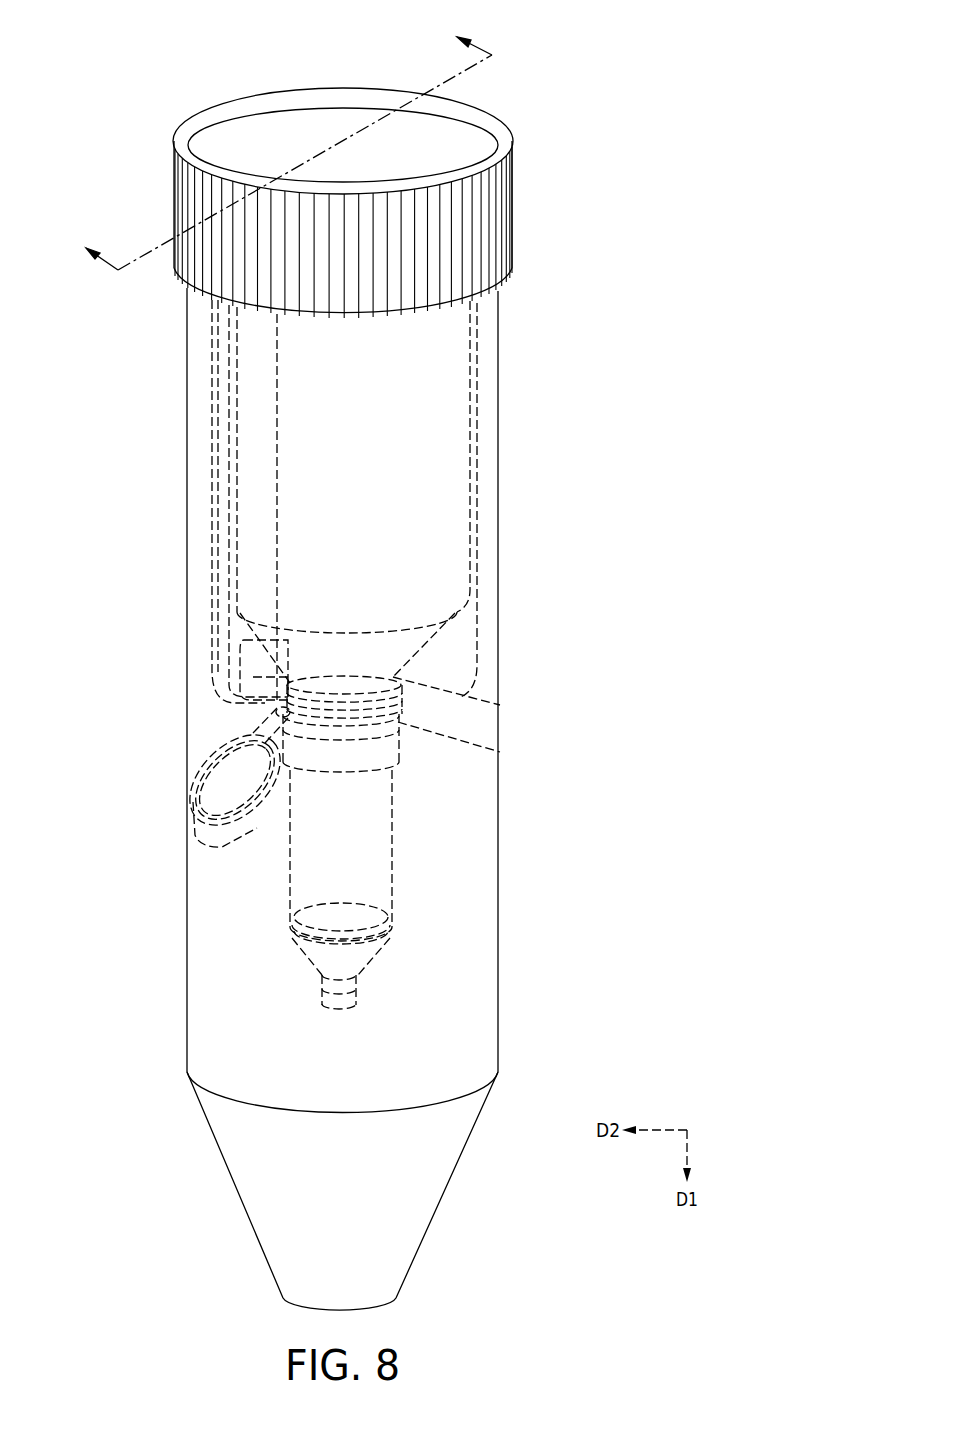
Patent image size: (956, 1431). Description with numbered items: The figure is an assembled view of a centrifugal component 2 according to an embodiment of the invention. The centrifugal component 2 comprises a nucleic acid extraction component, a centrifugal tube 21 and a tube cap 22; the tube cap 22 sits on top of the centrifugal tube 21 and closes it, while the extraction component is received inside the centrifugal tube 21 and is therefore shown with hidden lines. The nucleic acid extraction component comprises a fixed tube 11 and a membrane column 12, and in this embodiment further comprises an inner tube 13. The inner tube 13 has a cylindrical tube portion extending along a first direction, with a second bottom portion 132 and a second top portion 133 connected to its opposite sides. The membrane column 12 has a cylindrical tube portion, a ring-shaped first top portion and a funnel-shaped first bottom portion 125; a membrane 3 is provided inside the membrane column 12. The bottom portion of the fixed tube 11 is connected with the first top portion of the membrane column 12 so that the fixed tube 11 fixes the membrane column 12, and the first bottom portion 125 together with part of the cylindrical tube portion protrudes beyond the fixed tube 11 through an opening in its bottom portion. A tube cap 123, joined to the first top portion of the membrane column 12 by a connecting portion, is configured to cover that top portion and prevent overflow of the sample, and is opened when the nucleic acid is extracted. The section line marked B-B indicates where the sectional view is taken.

The centrifugal component 2 is at (352, 661).
The tube cap 22 is at (508, 219).
The centrifugal tube 21 is at (186, 913).
The inner tube 13 is at (428, 439).
The fixed tube 11 is at (478, 636).
The second bottom portion 132 is at (388, 690).
The second top portion 133 is at (400, 742).
The membrane column 12 is at (396, 842).
The membrane 3 is at (393, 905).
The first bottom portion 125 is at (360, 952).
The tube cap 123 is at (203, 760).